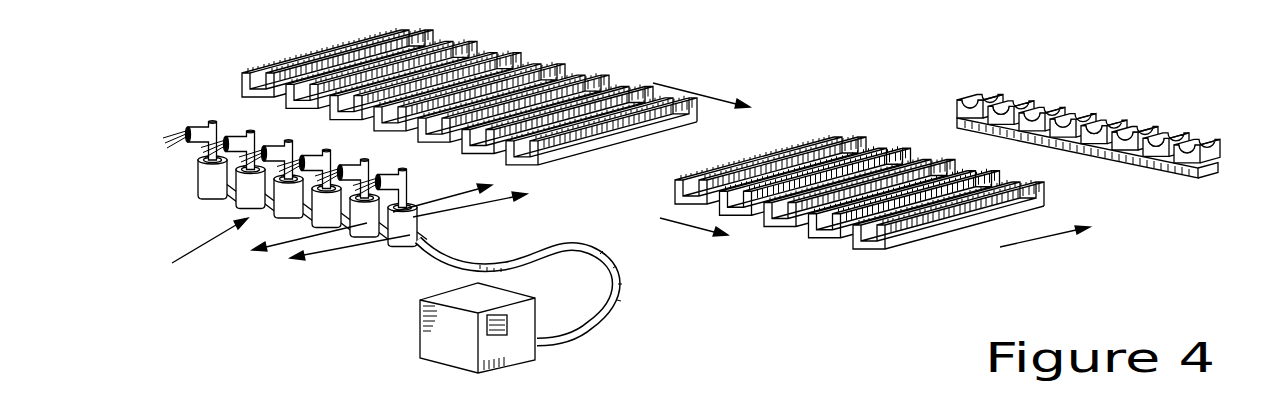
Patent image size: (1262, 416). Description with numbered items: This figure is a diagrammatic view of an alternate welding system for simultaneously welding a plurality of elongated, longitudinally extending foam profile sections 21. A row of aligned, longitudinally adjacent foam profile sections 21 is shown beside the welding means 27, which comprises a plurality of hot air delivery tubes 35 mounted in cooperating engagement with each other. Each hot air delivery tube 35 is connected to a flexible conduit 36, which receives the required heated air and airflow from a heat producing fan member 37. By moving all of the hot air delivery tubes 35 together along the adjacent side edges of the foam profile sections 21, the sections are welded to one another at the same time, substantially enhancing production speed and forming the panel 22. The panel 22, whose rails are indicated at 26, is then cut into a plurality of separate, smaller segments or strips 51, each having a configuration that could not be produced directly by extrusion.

The foam profile section 21 is at (600, 88).
The panel 22 is at (859, 188).
The rails 26 is at (817, 228).
The welding means 27 is at (172, 263).
The hot air delivery tube 35 is at (280, 148).
The flexible conduit 36 is at (590, 315).
The heat producing fan member 37 is at (435, 338).
The segment or strip 51 is at (1095, 117).